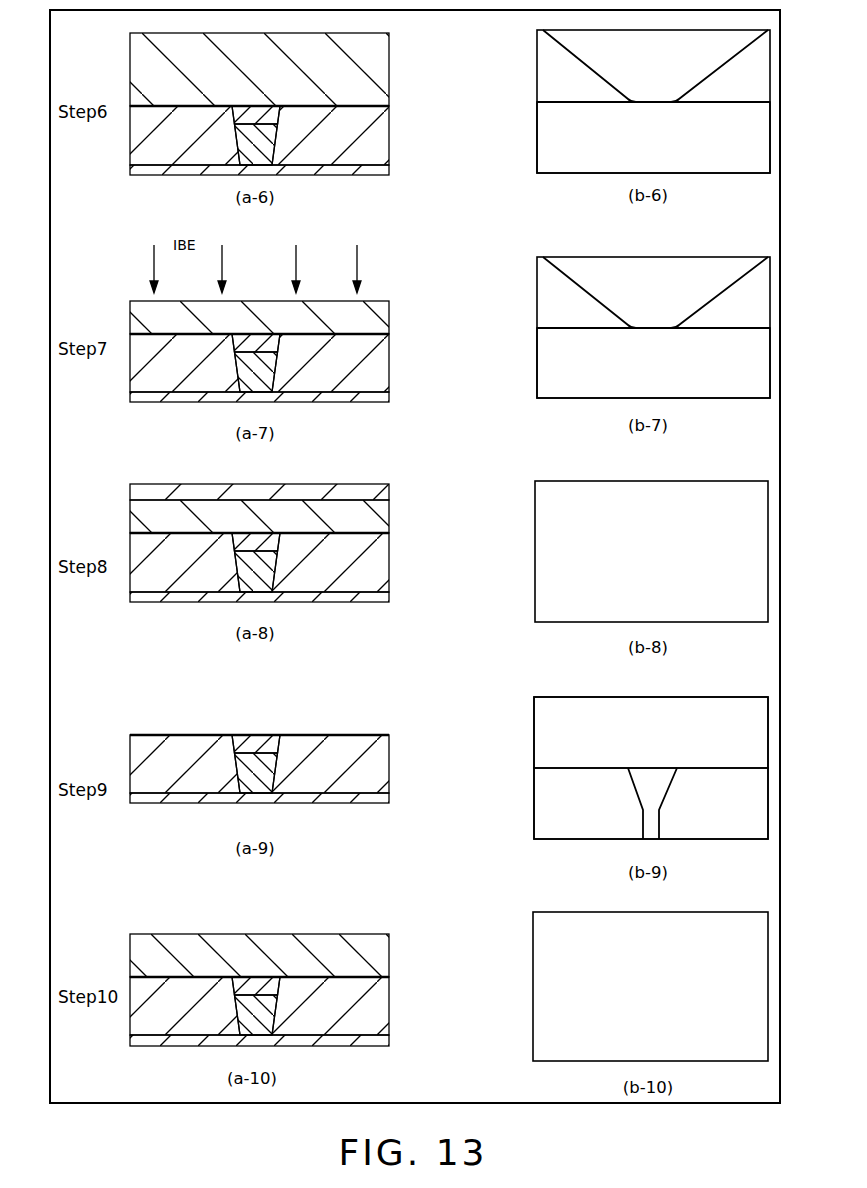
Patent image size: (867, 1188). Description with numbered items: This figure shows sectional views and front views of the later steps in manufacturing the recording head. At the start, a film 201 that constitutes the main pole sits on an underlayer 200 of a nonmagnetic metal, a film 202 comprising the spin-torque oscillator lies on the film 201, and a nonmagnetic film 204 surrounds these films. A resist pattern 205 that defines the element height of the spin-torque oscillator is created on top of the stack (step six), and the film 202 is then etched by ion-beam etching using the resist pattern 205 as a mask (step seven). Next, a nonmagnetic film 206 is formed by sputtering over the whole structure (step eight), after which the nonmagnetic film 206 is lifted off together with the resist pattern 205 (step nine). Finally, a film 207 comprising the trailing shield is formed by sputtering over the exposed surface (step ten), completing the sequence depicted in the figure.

The underlayer 200 is at (387, 166).
The film 201 is at (272, 152).
The film 202 is at (253, 112).
The nonmagnetic film 204 is at (385, 135).
The resist pattern 205 is at (387, 55).
The nonmagnetic film 206 is at (385, 490).
The film 207 is at (382, 943).